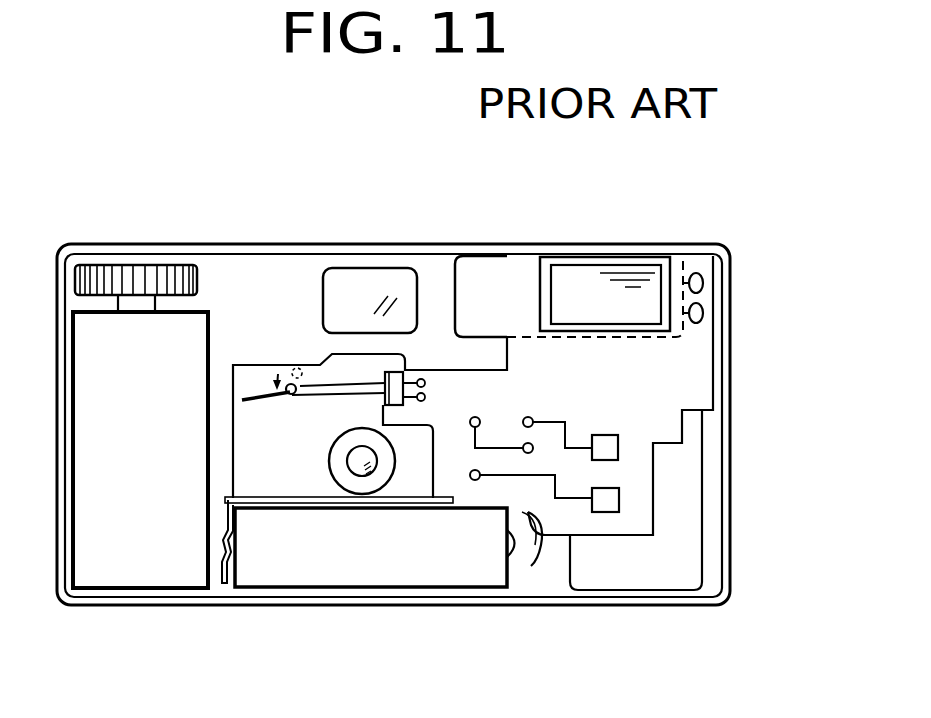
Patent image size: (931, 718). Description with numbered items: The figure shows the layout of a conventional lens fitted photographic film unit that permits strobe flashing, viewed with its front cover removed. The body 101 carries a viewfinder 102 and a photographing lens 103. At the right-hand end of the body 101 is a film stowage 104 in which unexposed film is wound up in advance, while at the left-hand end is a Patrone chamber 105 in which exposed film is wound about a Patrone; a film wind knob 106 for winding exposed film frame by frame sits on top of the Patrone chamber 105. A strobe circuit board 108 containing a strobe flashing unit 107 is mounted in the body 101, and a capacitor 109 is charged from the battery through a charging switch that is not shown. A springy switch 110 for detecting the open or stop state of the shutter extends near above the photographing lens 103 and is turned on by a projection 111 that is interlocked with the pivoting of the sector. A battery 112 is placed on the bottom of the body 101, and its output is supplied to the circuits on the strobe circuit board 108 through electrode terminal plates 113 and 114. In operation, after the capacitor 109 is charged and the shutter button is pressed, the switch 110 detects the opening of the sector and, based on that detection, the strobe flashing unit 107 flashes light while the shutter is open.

The body 101 is at (297, 243).
The viewfinder 102 is at (386, 268).
The photographing lens 103 is at (333, 467).
The film stowage 104 is at (635, 580).
The Patrone chamber 105 is at (162, 454).
The film wind knob 106 is at (163, 263).
The strobe flashing unit 107 is at (602, 268).
The strobe circuit board 108 is at (697, 385).
The capacitor 109 is at (490, 262).
The springy switch 110 is at (335, 398).
The projection 111 is at (311, 366).
The battery 112 is at (367, 585).
The electrode terminal plate 113 is at (540, 556).
The electrode terminal plate 114 is at (222, 578).